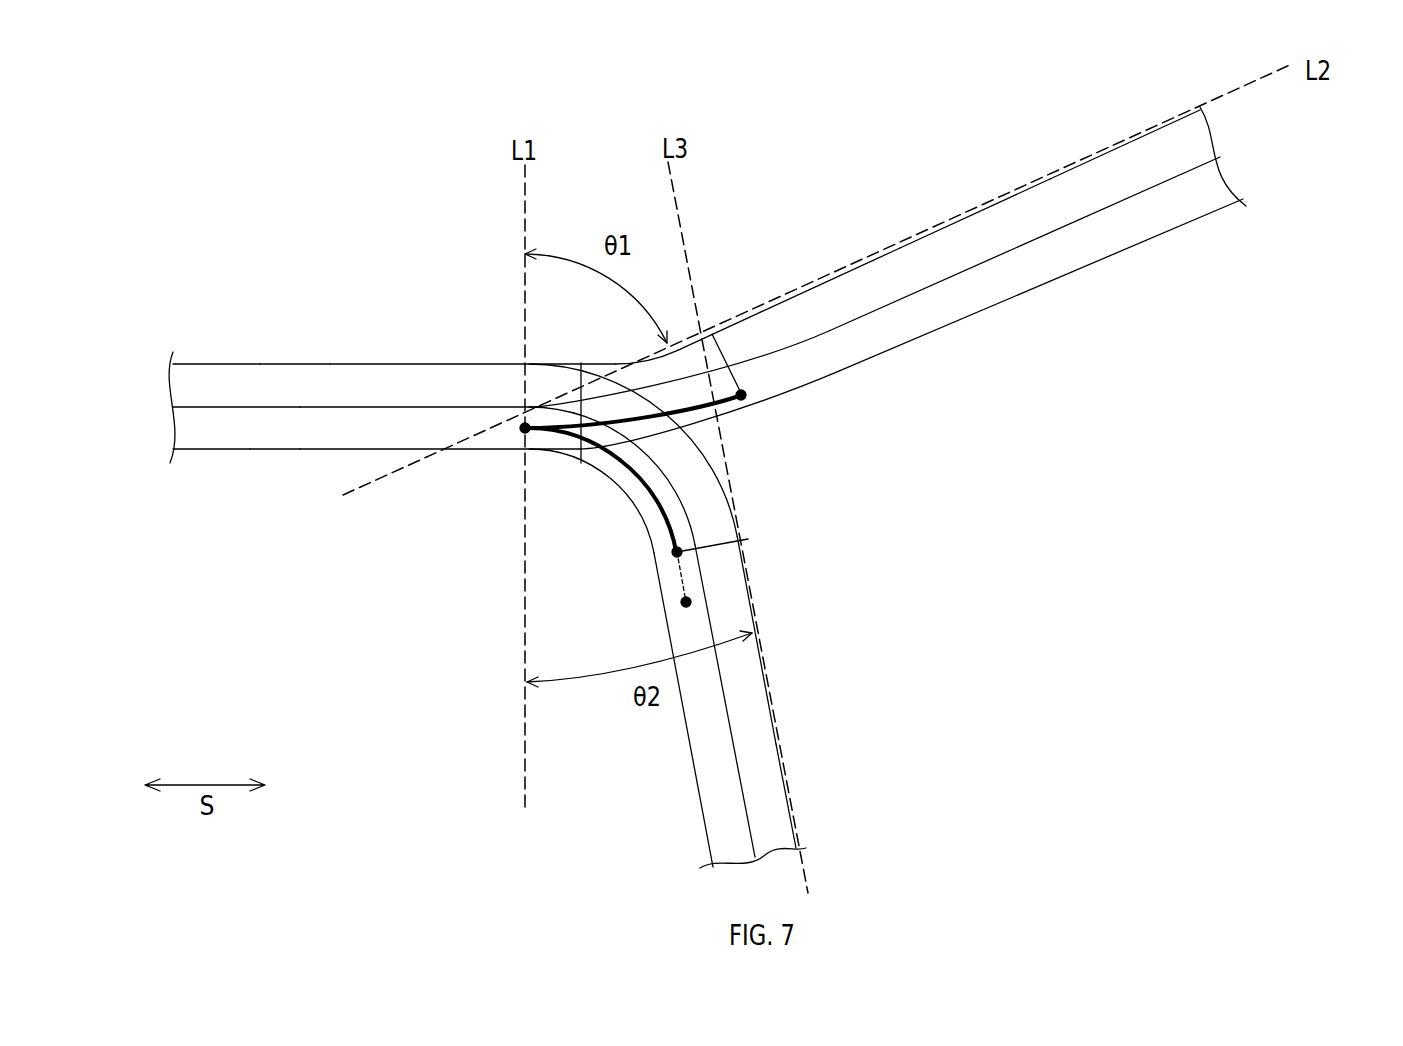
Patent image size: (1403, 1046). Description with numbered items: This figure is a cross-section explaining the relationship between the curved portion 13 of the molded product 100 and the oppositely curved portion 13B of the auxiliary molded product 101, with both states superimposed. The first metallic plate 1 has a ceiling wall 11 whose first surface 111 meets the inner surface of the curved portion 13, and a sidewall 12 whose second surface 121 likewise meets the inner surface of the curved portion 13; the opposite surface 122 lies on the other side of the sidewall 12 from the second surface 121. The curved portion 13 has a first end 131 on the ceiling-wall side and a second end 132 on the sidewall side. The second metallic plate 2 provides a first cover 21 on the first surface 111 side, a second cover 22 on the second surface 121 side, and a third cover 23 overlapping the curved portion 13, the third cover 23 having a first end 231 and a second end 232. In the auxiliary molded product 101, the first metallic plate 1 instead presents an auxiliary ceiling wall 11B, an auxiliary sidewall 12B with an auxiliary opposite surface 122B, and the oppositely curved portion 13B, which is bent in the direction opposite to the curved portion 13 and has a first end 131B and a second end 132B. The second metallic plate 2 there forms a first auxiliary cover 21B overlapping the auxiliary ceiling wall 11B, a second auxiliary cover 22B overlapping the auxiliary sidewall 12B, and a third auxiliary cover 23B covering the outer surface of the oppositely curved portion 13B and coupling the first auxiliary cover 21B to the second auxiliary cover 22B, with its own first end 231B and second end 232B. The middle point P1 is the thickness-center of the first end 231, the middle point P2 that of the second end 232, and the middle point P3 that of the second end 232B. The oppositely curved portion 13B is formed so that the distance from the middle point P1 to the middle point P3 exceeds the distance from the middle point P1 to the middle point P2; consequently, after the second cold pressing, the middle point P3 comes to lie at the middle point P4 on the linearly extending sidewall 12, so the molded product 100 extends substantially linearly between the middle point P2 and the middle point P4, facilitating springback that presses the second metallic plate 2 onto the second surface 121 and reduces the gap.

The first metallic plate 1 is at (194, 356).
The second metallic plate 2 is at (213, 468).
The ceiling wall 11 is at (280, 362).
The auxiliary ceiling wall 11B is at (325, 363).
The first surface 111 is at (224, 407).
The sidewall 12 is at (778, 750).
The auxiliary sidewall 12B is at (1136, 140).
The curved portion 13 is at (720, 478).
The oppositely curved portion 13B is at (680, 348).
The first cover 21 is at (264, 452).
The first auxiliary cover 21B is at (318, 452).
The second cover 22 is at (695, 778).
The second auxiliary cover 22B is at (1160, 234).
The third cover 23 is at (625, 496).
The third auxiliary cover 23B is at (727, 432).
The molded product 100 is at (843, 629).
The auxiliary molded product 101 is at (1258, 250).
The second surface 121 is at (748, 834).
The opposite surface 122 is at (784, 773).
The auxiliary opposite surface 122B is at (977, 213).
The first end 131 is at (524, 362).
The first end 131B is at (581, 363).
The second end 132 is at (750, 540).
The second end 132B is at (710, 332).
The first end 231 is at (522, 453).
The first end 231B is at (581, 463).
The second end 232 is at (643, 560).
The second end 232B is at (754, 403).
The middle point P1 is at (523, 430).
The middle point P2 is at (672, 553).
The middle point P3 is at (745, 396).
The middle point P4 is at (681, 603).